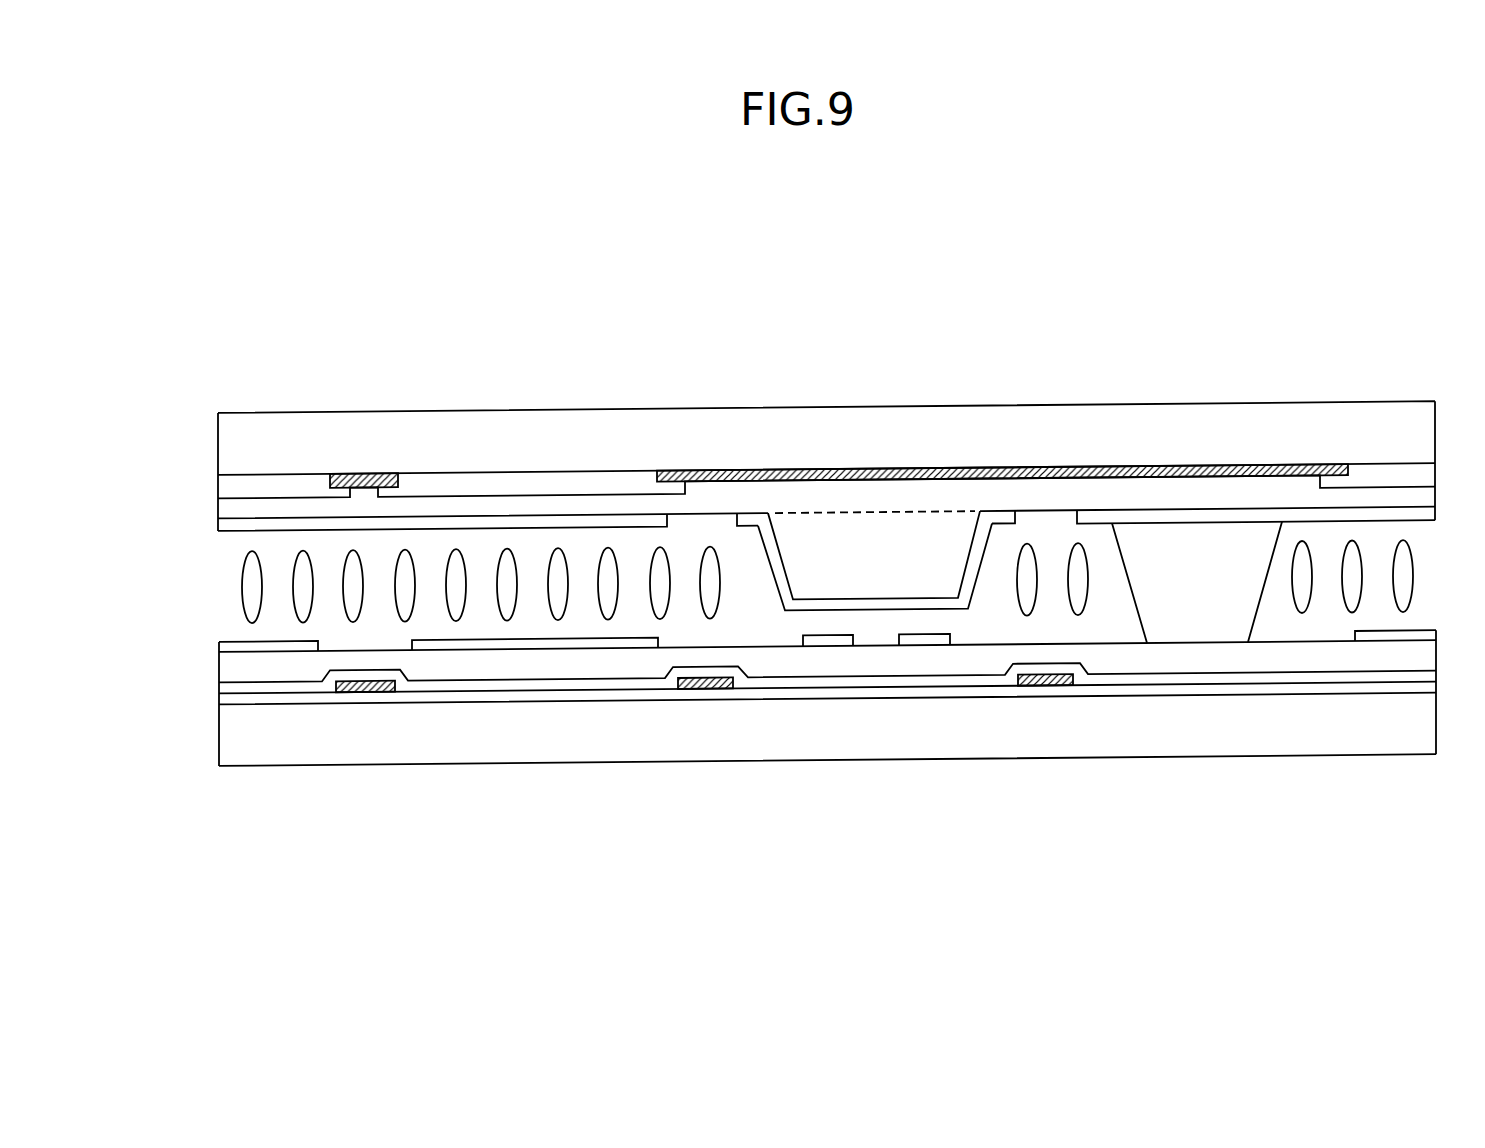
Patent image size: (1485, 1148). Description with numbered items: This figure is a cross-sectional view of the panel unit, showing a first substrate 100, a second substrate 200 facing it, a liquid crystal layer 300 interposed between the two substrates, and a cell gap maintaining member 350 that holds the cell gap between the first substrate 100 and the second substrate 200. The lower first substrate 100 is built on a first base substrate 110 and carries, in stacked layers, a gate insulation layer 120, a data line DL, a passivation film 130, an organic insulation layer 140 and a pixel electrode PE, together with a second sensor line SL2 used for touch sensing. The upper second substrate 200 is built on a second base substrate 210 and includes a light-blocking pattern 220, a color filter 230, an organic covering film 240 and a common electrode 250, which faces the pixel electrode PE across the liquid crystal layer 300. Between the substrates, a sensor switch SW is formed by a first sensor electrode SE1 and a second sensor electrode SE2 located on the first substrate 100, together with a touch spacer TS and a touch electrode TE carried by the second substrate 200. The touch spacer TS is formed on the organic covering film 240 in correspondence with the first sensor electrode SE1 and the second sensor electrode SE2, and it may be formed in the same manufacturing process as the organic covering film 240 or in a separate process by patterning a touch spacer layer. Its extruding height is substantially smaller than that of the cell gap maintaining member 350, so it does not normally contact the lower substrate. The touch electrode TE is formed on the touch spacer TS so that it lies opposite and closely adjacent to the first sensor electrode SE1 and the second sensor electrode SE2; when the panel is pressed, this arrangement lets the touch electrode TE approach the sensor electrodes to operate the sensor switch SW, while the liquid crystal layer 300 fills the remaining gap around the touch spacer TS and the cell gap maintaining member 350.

The first substrate 100 is at (215, 641).
The first base substrate 110 is at (418, 737).
The gate insulation layer 120 is at (483, 698).
The passivation film 130 is at (546, 686).
The organic insulation layer 140 is at (607, 665).
The pixel electrode PE is at (634, 650).
The data line DL is at (361, 695).
The second sensor line SL2 is at (1052, 680).
The first sensor electrode SE1 is at (830, 645).
The second sensor electrode SE2 is at (928, 645).
The touch spacer TS is at (878, 575).
The touch electrode TE is at (950, 603).
The sensor switch SW is at (1007, 845).
The second substrate 200 is at (215, 413).
The second base substrate 210 is at (508, 435).
The light-blocking pattern 220 is at (728, 470).
The color filter 230 is at (590, 485).
The organic covering film 240 is at (903, 495).
The common electrode 250 is at (430, 525).
The liquid crystal layer 300 is at (222, 588).
The cell gap maintaining member 350 is at (1195, 552).